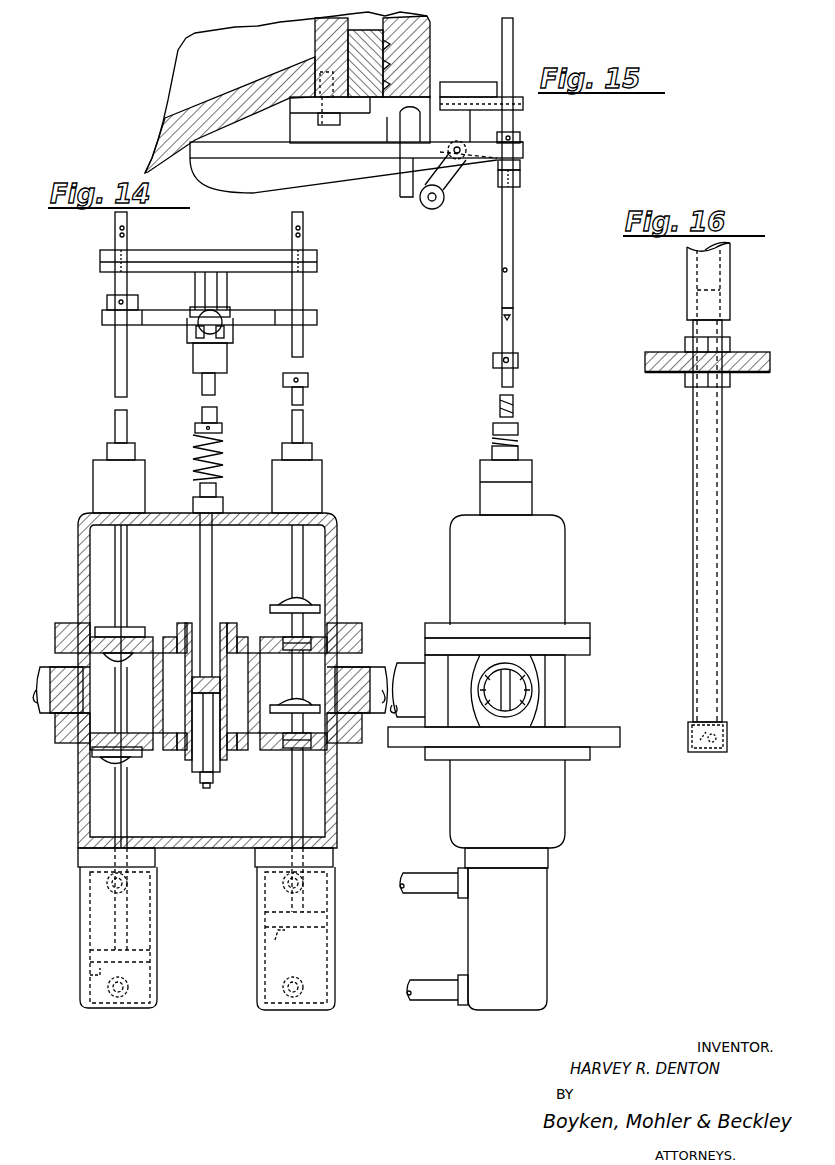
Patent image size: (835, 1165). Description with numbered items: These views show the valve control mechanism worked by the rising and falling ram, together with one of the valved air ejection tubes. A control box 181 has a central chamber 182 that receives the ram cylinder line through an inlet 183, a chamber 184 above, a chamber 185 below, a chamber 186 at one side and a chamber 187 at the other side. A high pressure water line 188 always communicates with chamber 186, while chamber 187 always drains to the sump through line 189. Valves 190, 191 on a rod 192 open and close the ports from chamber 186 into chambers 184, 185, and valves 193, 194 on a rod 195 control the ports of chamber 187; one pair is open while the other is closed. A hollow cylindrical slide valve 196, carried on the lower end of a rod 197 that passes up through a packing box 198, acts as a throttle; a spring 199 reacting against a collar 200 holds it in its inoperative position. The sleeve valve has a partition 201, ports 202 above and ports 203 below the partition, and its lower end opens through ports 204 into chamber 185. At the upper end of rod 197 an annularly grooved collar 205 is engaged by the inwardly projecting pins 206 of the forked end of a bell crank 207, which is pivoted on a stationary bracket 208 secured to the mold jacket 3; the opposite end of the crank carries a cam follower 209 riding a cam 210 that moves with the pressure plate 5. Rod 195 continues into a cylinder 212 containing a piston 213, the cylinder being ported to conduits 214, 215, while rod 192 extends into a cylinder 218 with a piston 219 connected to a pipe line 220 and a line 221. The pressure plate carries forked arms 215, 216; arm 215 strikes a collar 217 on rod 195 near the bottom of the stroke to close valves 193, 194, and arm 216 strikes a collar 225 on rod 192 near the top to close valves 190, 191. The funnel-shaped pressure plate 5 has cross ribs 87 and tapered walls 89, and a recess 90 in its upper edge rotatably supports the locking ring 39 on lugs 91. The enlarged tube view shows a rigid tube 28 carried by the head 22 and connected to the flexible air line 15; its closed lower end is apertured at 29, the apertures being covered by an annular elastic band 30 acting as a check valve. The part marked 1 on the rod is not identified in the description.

In FIG. 15, the coupling 1 is at (513, 410).
In FIG. 15, the mold jacket 3 is at (425, 30).
In FIG. 15, the pressure plate 5 is at (159, 114).
In FIG. 16, the flexible air line 15 is at (731, 274).
In FIG. 16, the head 22 is at (752, 358).
In FIG. 16, the rigid tube 28 is at (723, 486).
In FIG. 16, the apertures 29 is at (725, 722).
In FIG. 16, the annular elastic band 30 is at (728, 739).
In FIG. 15, the locking ring 39 is at (380, 62).
In FIG. 15, the cross ribs 87 is at (190, 60).
In FIG. 15, the tapered walls 89 is at (190, 92).
In FIG. 15, the recess 90 is at (318, 42).
In FIG. 15, the lugs or supports 91 is at (354, 122).
In FIG. 15, the control box 181 is at (572, 572).
In FIG. 14, the control box 181 is at (333, 575).
In FIG. 14, the central chamber 182 is at (173, 640).
In FIG. 15, the inlet 183 is at (412, 707).
In FIG. 14, the inlet 183 is at (226, 760).
In FIG. 14, the chamber 184 is at (335, 530).
In FIG. 14, the chamber 185 is at (218, 825).
In FIG. 14, the chamber 186 is at (196, 772).
In FIG. 14, the chamber 187 is at (333, 622).
In FIG. 15, the high pressure water line 188 is at (530, 694).
In FIG. 14, the high pressure water line 188 is at (42, 666).
In FIG. 14, the line 189 is at (370, 665).
In FIG. 14, the valve 190 is at (130, 665).
In FIG. 14, the valve 191 is at (128, 768).
In FIG. 15, the rod 192 is at (514, 243).
In FIG. 14, the rod 192 is at (125, 395).
In FIG. 14, the valve 193 is at (290, 606).
In FIG. 14, the valve 194 is at (288, 707).
In FIG. 15, the rod 195 is at (513, 336).
In FIG. 14, the rod 195 is at (300, 407).
In FIG. 14, the slide valve 196 is at (218, 640).
In FIG. 14, the rod 197 is at (212, 554).
In FIG. 14, the packing box 198 is at (223, 495).
In FIG. 14, the spring 199 is at (223, 459).
In FIG. 15, the collar 200 is at (519, 428).
In FIG. 14, the collar 200 is at (222, 427).
In FIG. 14, the partition 201 is at (240, 705).
In FIG. 14, the ports 202 is at (168, 655).
In FIG. 14, the ports 203 is at (190, 705).
In FIG. 14, the ports 204 is at (214, 785).
In FIG. 15, the annularly grooved collar 205 is at (521, 176).
In FIG. 14, the annularly grooved collar 205 is at (215, 322).
In FIG. 15, the pins 206 is at (521, 165).
In FIG. 14, the pins 206 is at (196, 333).
In FIG. 15, the bell crank 207 is at (470, 170).
In FIG. 15, the bracket 208 is at (470, 125).
In FIG. 14, the bracket 208 is at (228, 290).
In FIG. 15, the cam follower 209 is at (434, 210).
In FIG. 14, the cam follower 209 is at (216, 378).
In FIG. 15, the cam 210 is at (408, 198).
In FIG. 14, the cam 210 is at (205, 293).
In FIG. 14, the cylinder 212 is at (336, 965).
In FIG. 14, the piston 213 is at (272, 940).
In FIG. 14, the conduit 214 is at (305, 883).
In FIG. 14, the conduit 215 is at (318, 313).
In FIG. 15, the arm 216 is at (522, 150).
In FIG. 14, the arm 216 is at (102, 315).
In FIG. 15, the collar 217 is at (519, 360).
In FIG. 14, the collar 217 is at (309, 380).
In FIG. 15, the cylinder 218 is at (548, 935).
In FIG. 14, the cylinder 218 is at (158, 940).
In FIG. 14, the piston 219 is at (90, 978).
In FIG. 15, the pipe line 220 is at (427, 893).
In FIG. 14, the pipe line 220 is at (130, 890).
In FIG. 15, the line 221 is at (430, 1000).
In FIG. 14, the line 221 is at (130, 988).
In FIG. 15, the collar 225 is at (520, 134).
In FIG. 14, the collar 225 is at (107, 302).